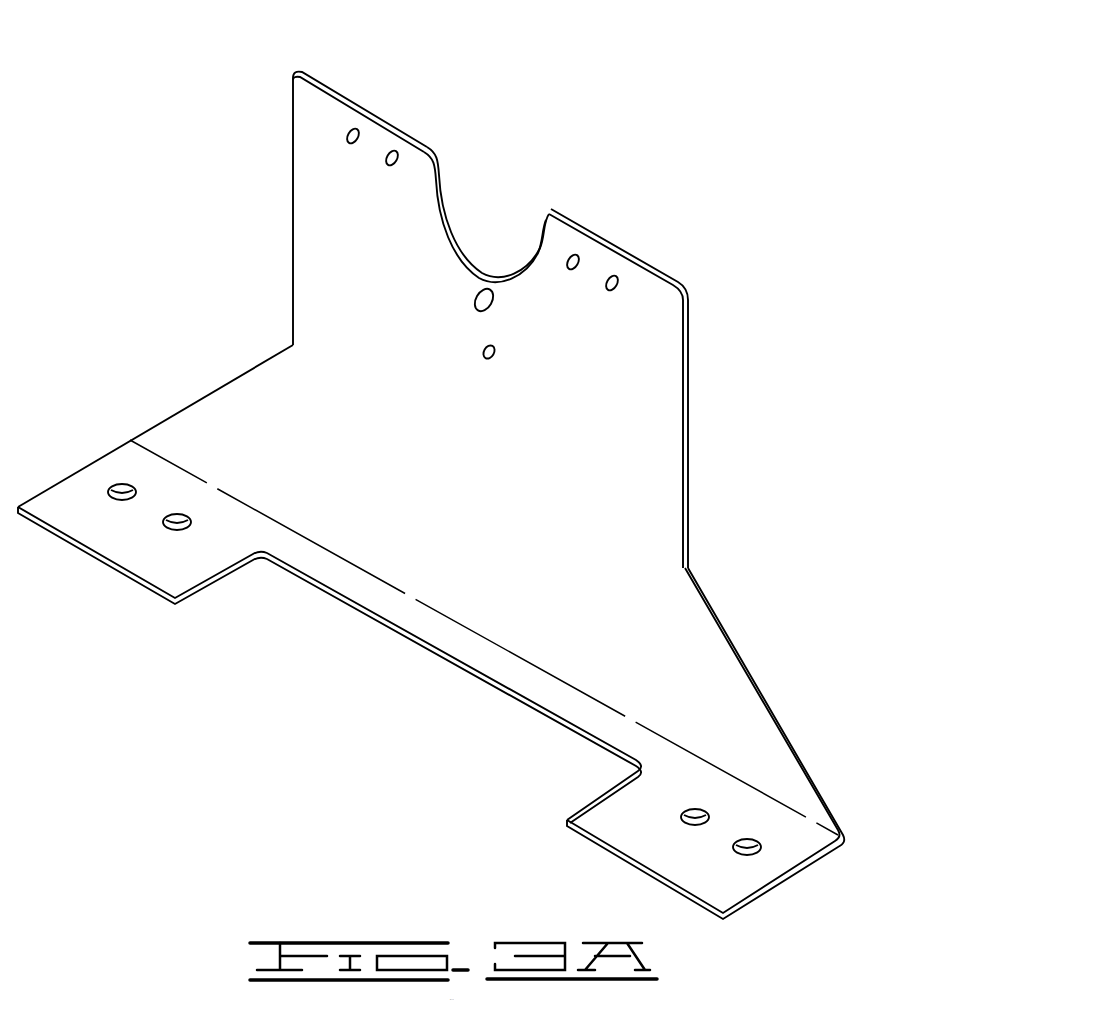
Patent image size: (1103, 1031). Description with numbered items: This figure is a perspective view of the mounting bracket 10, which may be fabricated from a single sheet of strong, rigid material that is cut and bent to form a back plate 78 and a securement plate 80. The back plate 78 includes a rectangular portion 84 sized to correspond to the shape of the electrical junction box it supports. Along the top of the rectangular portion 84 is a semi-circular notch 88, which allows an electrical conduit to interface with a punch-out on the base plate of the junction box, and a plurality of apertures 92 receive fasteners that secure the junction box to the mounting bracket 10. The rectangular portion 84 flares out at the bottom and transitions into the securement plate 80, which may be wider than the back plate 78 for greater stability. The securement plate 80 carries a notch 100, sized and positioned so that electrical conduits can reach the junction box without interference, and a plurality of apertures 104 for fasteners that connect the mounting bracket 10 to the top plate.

The mounting bracket 10 is at (647, 97).
The back plate 78 is at (645, 510).
The securement plate 80 is at (727, 878).
The rectangular portion 84 is at (325, 240).
The semi-circular notch 88 is at (497, 219).
The apertures 92 is at (353, 130).
The notch 100 is at (353, 676).
The apertures 104 is at (172, 525).